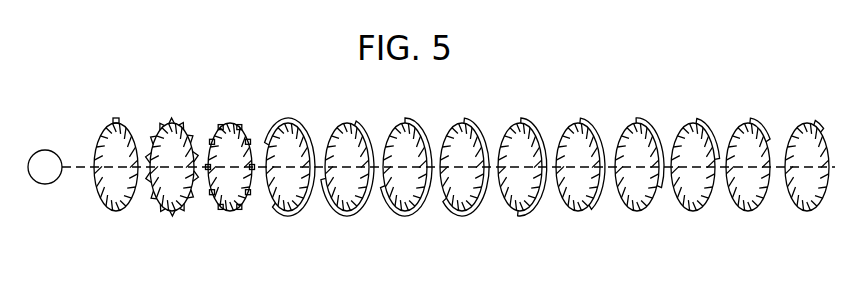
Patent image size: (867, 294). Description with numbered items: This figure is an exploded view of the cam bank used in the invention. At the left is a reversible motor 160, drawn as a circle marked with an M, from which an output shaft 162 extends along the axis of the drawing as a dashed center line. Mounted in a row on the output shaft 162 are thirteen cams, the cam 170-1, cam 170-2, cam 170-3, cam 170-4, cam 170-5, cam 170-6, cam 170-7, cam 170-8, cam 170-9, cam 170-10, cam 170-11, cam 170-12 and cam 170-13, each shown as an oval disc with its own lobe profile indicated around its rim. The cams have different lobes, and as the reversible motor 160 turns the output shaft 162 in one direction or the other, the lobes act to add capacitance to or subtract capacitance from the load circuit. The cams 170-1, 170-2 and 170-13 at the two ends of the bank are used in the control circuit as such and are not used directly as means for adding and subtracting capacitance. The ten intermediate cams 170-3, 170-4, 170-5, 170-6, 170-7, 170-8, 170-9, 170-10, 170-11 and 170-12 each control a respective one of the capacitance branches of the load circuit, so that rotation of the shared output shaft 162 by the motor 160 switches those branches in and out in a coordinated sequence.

The reversible motor 160 is at (53, 150).
The output shaft 162 is at (88, 167).
The cam 170-1 is at (116, 211).
The cam 170-2 is at (175, 124).
The cam 170-3 is at (228, 212).
The cam 170-4 is at (292, 124).
The cam 170-5 is at (347, 212).
The cam 170-6 is at (407, 123).
The cam 170-7 is at (462, 212).
The cam 170-8 is at (527, 123).
The cam 170-9 is at (577, 212).
The cam 170-10 is at (640, 123).
The cam 170-11 is at (692, 212).
The cam 170-12 is at (753, 123).
The cam 170-13 is at (800, 213).